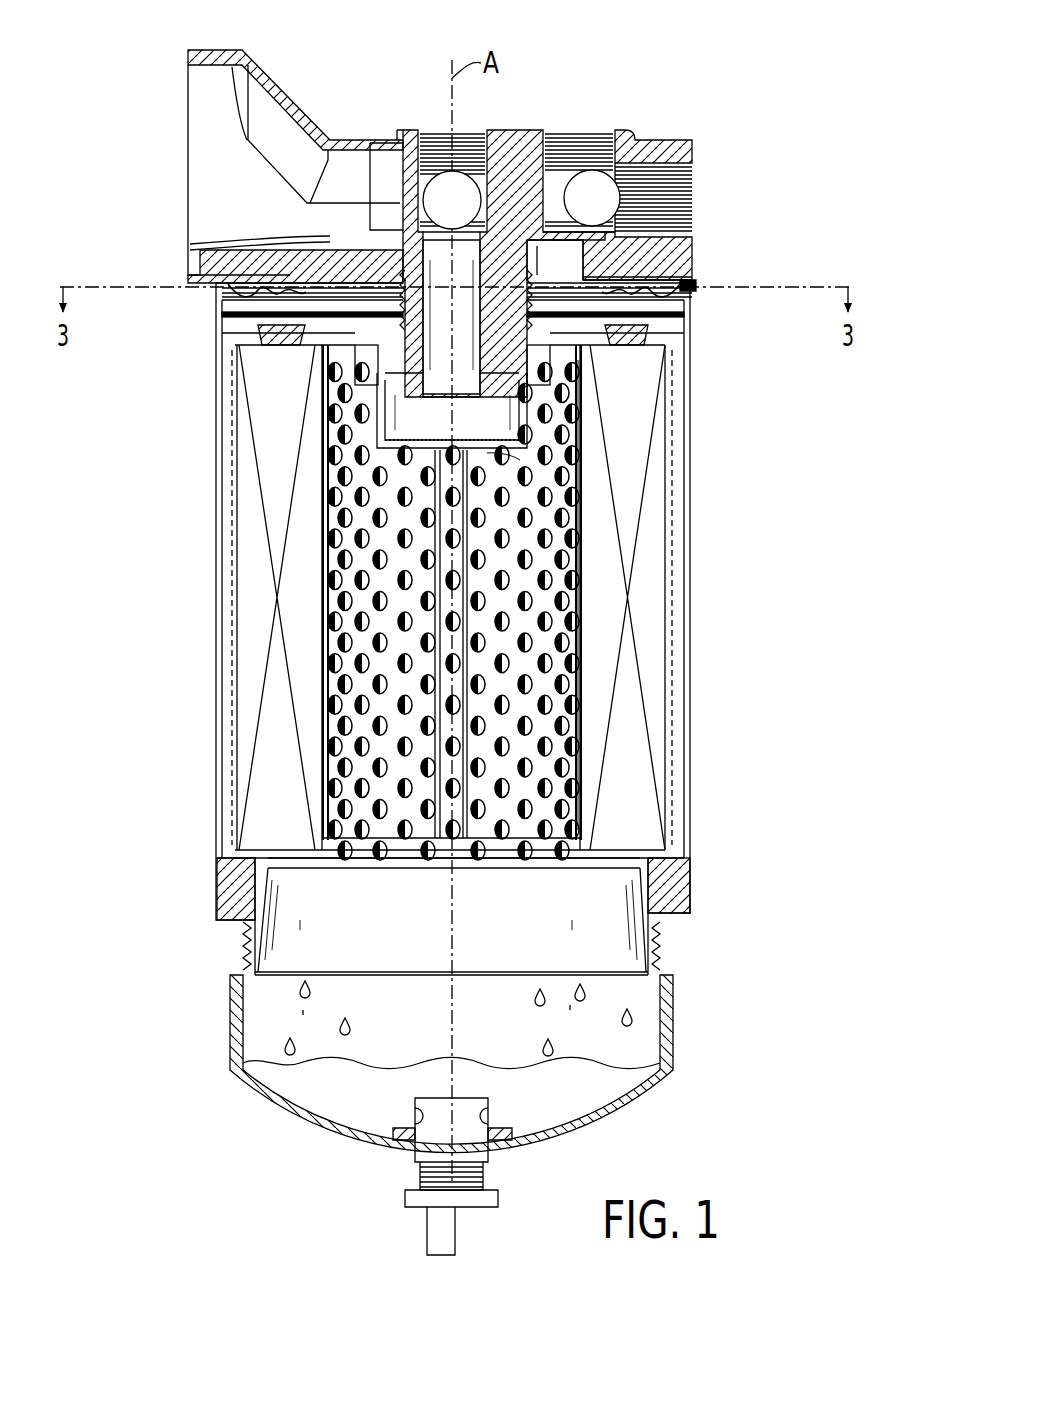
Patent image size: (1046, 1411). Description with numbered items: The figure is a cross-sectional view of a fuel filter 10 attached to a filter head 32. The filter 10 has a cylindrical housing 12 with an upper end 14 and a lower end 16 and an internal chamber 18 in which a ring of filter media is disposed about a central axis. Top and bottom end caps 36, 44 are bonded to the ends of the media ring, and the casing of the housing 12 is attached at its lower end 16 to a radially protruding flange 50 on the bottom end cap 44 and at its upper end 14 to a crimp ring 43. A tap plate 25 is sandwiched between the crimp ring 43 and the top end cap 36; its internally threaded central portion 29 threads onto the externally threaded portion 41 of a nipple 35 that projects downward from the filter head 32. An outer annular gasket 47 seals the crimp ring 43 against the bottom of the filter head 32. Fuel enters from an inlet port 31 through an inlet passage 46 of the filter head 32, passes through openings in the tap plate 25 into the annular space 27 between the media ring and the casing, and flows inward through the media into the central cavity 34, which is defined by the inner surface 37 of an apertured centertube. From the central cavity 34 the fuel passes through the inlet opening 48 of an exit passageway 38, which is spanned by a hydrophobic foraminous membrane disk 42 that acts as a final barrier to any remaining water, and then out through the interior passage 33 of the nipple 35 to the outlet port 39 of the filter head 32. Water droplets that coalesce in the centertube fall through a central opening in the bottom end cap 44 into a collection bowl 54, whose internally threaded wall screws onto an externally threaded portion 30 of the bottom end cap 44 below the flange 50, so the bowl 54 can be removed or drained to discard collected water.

The filter 10 is at (168, 384).
The housing 12 is at (210, 598).
The upper end 14 is at (700, 278).
The lower end 16 is at (681, 918).
The internal chamber 18 is at (228, 331).
The tap plate 25 is at (305, 310).
The annular space 27 is at (682, 387).
The internally threaded central portion 29 is at (452, 400).
The externally threaded portion 30 is at (667, 951).
The inlet port 31 is at (592, 190).
The filter head 32 is at (722, 128).
The interior passage 33 is at (425, 280).
The central cavity 34 is at (528, 580).
The nipple 35 is at (478, 302).
The top end cap 36 is at (660, 342).
The inner surface 37 is at (580, 742).
The exit passageway 38 is at (415, 414).
The outlet port 39 is at (445, 185).
The externally threaded portion 41 is at (405, 283).
The hydrophobic foraminous membrane disk 42 is at (487, 455).
The crimp ring 43 is at (690, 283).
The bottom end cap 44 is at (645, 881).
The inlet passage 46 is at (540, 258).
The annular gasket 47 is at (205, 245).
The inlet opening 48 is at (428, 462).
The flange 50 is at (683, 914).
The collection bowl 54 is at (275, 1011).